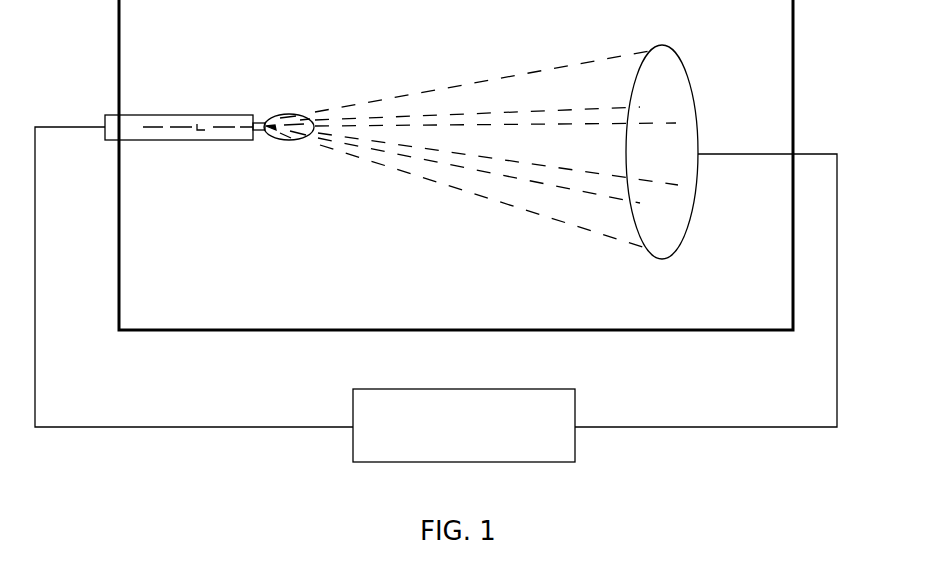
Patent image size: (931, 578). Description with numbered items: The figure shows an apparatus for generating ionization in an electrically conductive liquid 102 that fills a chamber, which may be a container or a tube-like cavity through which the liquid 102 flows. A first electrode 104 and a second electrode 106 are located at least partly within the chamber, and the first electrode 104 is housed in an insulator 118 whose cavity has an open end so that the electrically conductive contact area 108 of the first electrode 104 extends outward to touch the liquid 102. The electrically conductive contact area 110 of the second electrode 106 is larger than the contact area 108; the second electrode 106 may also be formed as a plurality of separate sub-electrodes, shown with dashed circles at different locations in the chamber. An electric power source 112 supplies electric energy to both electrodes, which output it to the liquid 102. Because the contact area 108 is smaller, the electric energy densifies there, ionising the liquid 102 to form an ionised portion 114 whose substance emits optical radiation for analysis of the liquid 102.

The electrically conductive liquid 102 is at (268, 265).
The first electrode 104 is at (222, 123).
The second electrode 106 is at (663, 46).
The electrically conductive contact area of the first electrode 108 is at (263, 119).
The electrically conductive contact area of the second electrode 110 is at (688, 234).
The electric power source 112 is at (470, 389).
The ionised portion 114 is at (285, 141).
The insulator 118 is at (143, 114).